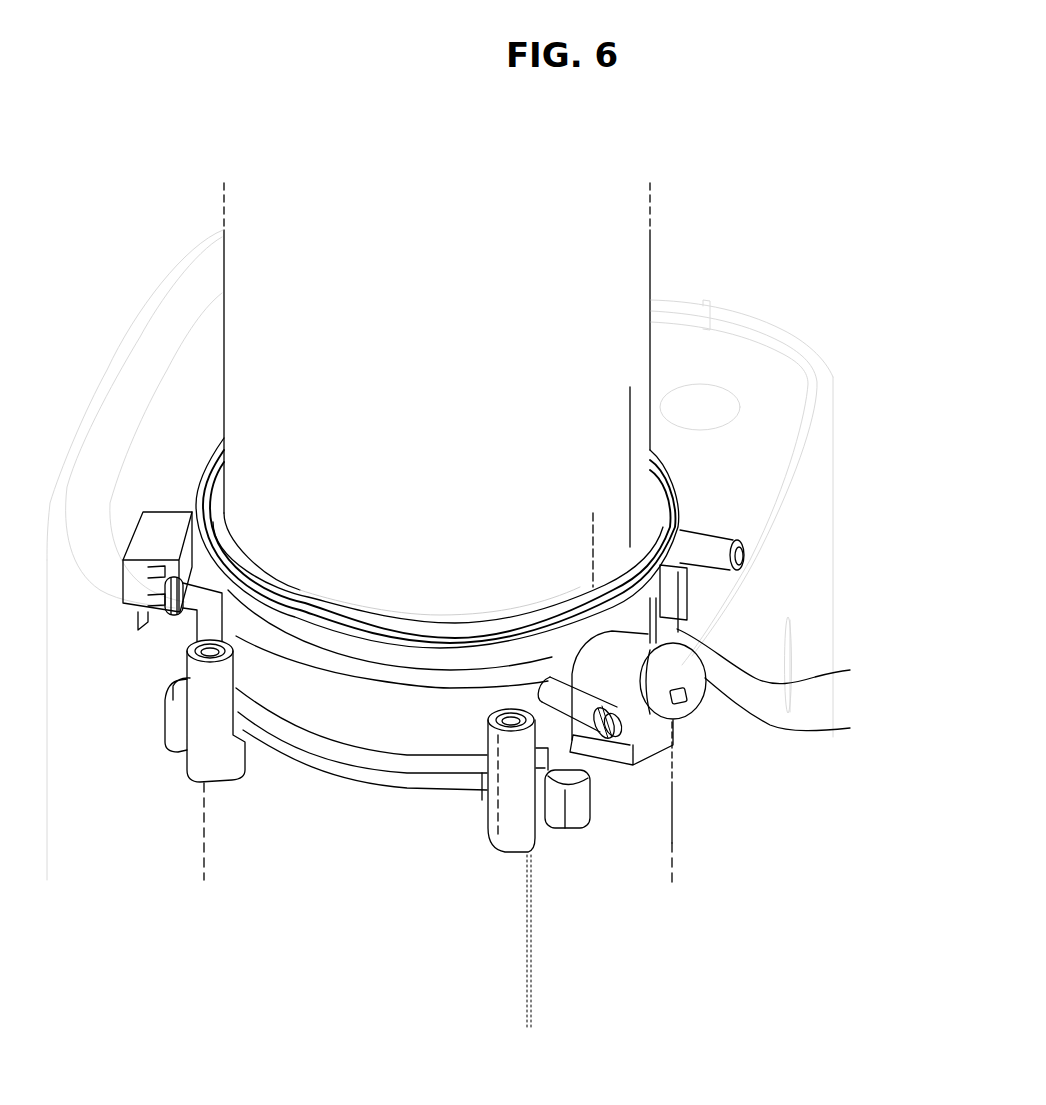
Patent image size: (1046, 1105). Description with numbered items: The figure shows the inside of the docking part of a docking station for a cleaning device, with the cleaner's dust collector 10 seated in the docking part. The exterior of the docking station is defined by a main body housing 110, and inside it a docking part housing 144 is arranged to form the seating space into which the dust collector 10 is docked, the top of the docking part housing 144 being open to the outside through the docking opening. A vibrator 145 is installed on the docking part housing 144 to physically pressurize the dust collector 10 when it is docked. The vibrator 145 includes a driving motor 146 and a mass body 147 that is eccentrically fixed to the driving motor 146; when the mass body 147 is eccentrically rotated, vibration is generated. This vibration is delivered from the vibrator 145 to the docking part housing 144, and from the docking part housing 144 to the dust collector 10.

The dust collector 10 is at (632, 307).
The main body housing 110 is at (833, 460).
The docking part housing 144 is at (268, 802).
The vibrator 145 is at (747, 706).
The driving motor 146 is at (730, 706).
The mass body 147 is at (888, 660).